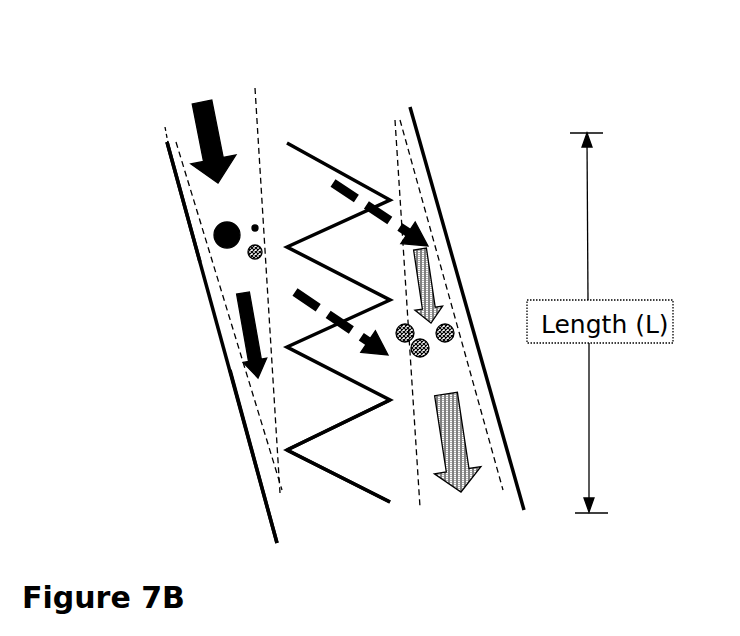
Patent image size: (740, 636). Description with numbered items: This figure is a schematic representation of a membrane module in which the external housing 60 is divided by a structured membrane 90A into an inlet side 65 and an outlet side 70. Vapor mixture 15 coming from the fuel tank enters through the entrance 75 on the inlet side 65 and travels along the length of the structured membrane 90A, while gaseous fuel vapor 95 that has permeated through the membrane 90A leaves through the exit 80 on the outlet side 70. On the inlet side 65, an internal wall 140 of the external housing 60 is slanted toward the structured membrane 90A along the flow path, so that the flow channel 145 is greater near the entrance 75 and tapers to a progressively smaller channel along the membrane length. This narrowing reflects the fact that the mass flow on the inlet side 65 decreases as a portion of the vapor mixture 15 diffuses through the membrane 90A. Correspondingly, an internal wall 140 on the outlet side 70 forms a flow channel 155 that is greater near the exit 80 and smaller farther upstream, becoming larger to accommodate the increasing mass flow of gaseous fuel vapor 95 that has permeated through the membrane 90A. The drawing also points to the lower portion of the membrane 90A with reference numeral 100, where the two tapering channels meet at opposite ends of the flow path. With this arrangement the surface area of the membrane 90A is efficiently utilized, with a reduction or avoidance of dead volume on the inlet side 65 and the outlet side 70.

The vapor mixture 15 is at (248, 226).
The external housing 60 is at (172, 348).
The inlet side 65 is at (193, 196).
The outlet side 70 is at (463, 443).
The entrance 75 is at (195, 109).
The exit 80 is at (473, 546).
The structured membrane 90A is at (314, 147).
The gaseous fuel vapor 95 is at (423, 330).
The membrane outlet segment 100 is at (333, 473).
The internal wall 140 is at (237, 395).
The flow channel 145 is at (237, 268).
The flow channel 155 is at (425, 428).